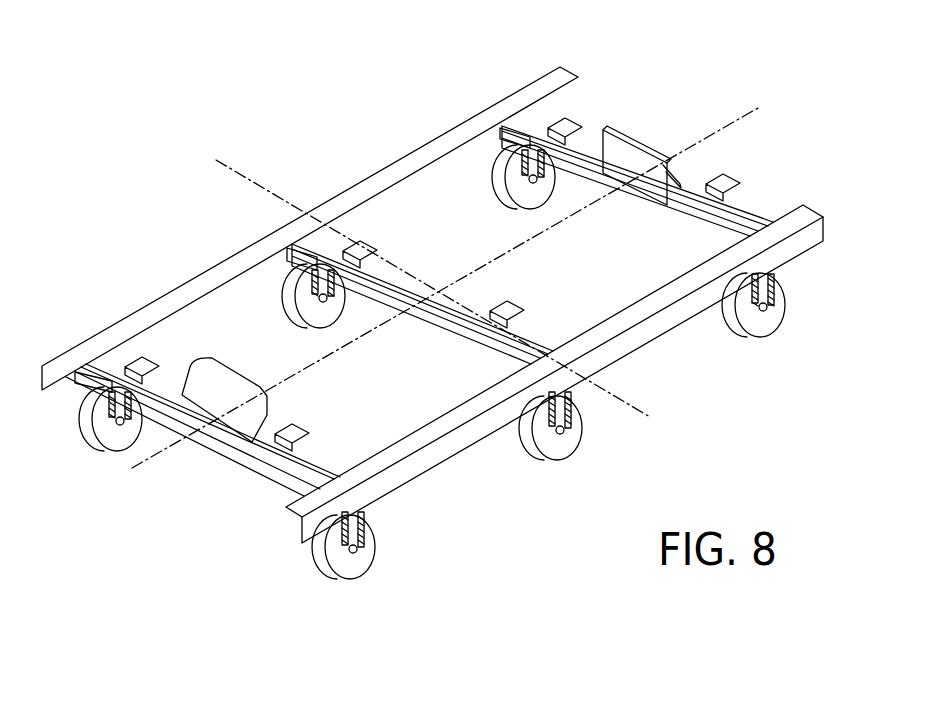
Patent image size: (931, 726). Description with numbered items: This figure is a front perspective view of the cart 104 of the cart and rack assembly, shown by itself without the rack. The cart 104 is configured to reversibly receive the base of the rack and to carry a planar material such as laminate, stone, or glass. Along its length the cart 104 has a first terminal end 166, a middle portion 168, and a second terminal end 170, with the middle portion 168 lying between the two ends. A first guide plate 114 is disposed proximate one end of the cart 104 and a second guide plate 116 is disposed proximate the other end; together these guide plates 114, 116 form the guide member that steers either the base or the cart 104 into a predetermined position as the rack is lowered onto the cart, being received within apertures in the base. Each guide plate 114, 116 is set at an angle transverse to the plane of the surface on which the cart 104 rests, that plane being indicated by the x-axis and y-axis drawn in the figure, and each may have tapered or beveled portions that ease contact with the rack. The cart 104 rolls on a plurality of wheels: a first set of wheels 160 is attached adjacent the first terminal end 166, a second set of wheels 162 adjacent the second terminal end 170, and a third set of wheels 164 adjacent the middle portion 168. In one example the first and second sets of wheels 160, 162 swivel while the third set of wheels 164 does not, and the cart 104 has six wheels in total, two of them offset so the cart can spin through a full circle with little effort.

The cart 104 is at (148, 154).
The first guide plate 114 is at (244, 366).
The second guide plate 116 is at (630, 138).
The first set of wheels 160 is at (108, 451).
The second set of wheels 162 is at (519, 210).
The third set of wheels 164 is at (317, 330).
The first terminal end 166 is at (213, 460).
The middle portion 168 is at (407, 322).
The second terminal end 170 is at (616, 195).